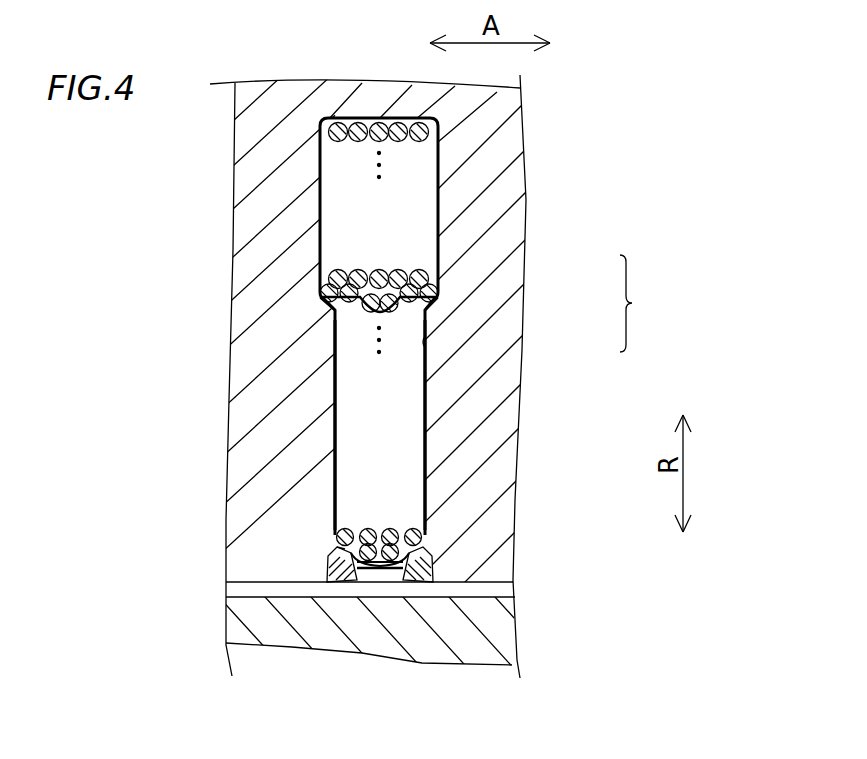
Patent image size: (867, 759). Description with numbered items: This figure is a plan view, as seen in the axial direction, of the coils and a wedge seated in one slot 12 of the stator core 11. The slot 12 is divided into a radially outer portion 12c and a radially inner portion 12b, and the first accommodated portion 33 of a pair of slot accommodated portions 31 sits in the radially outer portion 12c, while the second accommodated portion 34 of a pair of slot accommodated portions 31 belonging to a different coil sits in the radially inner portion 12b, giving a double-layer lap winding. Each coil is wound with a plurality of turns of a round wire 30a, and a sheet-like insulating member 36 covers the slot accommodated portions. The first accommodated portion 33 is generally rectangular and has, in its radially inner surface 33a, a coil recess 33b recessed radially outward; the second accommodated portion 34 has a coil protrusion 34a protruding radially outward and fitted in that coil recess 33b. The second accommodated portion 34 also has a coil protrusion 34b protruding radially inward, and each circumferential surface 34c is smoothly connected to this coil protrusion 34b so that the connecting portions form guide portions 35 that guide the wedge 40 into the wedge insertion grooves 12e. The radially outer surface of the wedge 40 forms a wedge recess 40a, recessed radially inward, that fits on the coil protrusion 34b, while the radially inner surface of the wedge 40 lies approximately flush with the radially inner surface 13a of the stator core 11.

The stator core 11 is at (297, 120).
The slot 12 is at (646, 303).
The radially inner portion 12b is at (426, 342).
The radially outer portion 12c is at (437, 258).
The wedge insertion groove 12e is at (333, 547).
The radially inner surface 13a is at (227, 590).
The round wire 30a is at (368, 117).
The slot accommodated portion 31 is at (295, 326).
The first accommodated portion 33 is at (277, 218).
The radially inner surface 33a is at (322, 296).
The coil recess 33b is at (345, 249).
The second accommodated portion 34 is at (373, 385).
The coil protrusion 34a is at (395, 285).
The coil protrusion 34b is at (394, 578).
The circumferential surface 34c is at (426, 443).
The guide portion 35 is at (420, 580).
The insulating member 36 is at (312, 195).
The wedge 40 is at (340, 630).
The wedge recess 40a is at (334, 563).